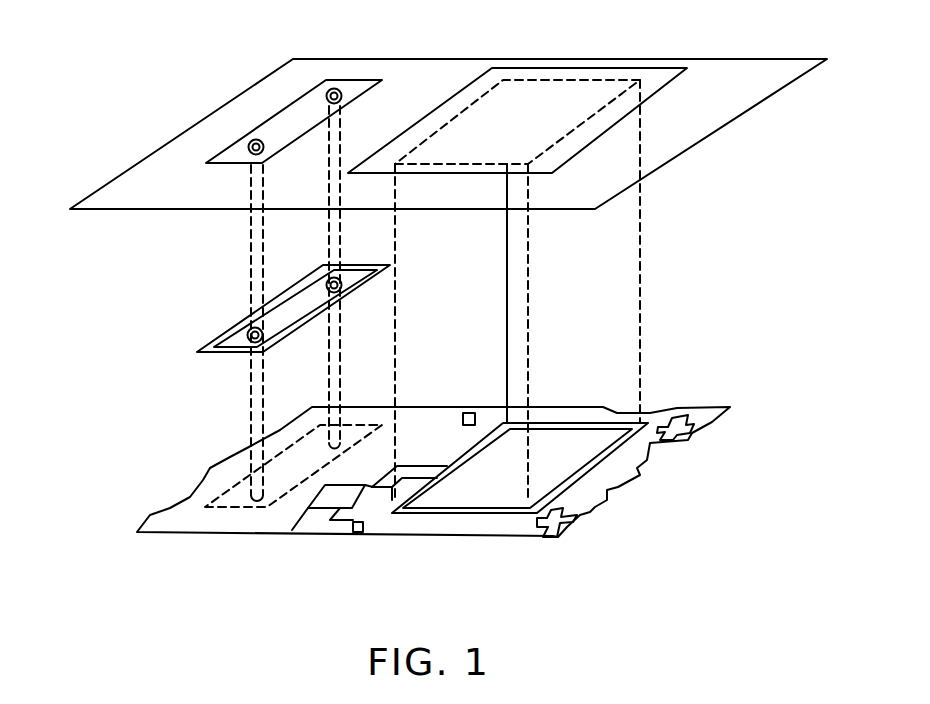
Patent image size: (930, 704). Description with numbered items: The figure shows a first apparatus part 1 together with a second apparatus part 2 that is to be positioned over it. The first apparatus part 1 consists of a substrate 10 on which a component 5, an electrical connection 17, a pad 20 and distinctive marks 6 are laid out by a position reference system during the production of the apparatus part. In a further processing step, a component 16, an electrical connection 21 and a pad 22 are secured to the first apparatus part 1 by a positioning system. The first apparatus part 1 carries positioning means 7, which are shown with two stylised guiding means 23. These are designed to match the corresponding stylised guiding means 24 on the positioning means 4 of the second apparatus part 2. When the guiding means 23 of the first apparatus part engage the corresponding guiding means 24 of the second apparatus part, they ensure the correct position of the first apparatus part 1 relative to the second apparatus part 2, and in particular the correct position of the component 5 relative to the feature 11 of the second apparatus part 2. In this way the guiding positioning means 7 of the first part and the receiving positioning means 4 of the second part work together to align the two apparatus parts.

The first apparatus part 1 is at (680, 475).
The second apparatus part 2 is at (182, 132).
The positioning means of the second apparatus part 4 is at (280, 122).
The component 5 is at (572, 423).
The distinctive marks 6 is at (718, 420).
The positioning means of the first apparatus part 7 is at (290, 307).
The substrate 10 is at (163, 522).
The feature 11 is at (543, 65).
The component 16 is at (302, 532).
The electrical connection 17 is at (412, 467).
The pad 20 is at (470, 413).
The electrical connection 21 is at (380, 500).
The pad 22 is at (360, 533).
The stylised guiding means 23 is at (250, 336).
The stylised guiding means 24 is at (330, 88).